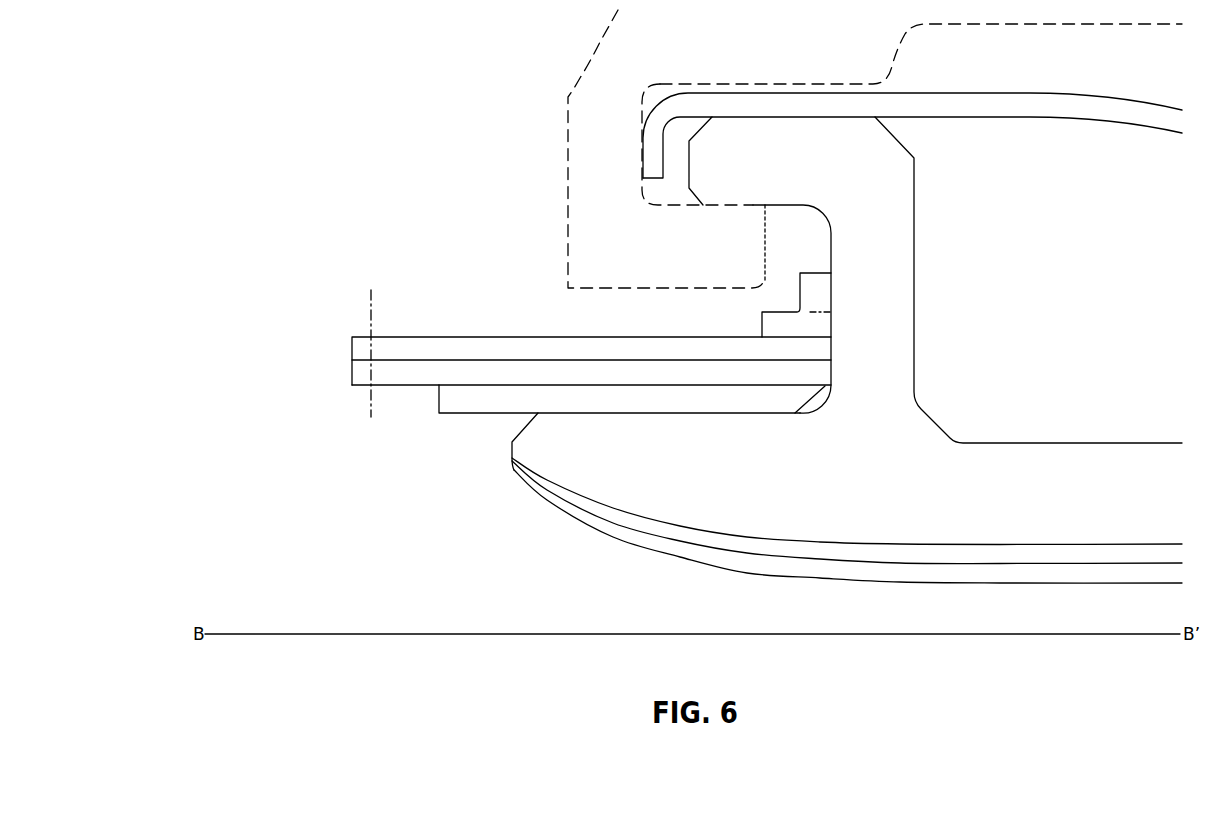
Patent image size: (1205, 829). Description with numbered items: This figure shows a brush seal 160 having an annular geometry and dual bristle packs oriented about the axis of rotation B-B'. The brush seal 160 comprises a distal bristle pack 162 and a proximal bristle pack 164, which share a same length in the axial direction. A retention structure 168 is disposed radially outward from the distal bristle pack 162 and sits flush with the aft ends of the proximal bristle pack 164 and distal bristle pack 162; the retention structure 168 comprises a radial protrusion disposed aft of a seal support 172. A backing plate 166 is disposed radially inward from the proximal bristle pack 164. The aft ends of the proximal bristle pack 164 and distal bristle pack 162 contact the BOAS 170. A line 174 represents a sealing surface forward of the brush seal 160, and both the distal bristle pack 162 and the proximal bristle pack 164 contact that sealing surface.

The brush seal 160 is at (434, 200).
The distal bristle pack 162 is at (468, 345).
The proximal bristle pack 164 is at (408, 380).
The backing plate 166 is at (482, 402).
The retention structure 168 is at (818, 296).
The BOAS 170 is at (898, 198).
The seal support 172 is at (595, 177).
The line 174 is at (366, 398).